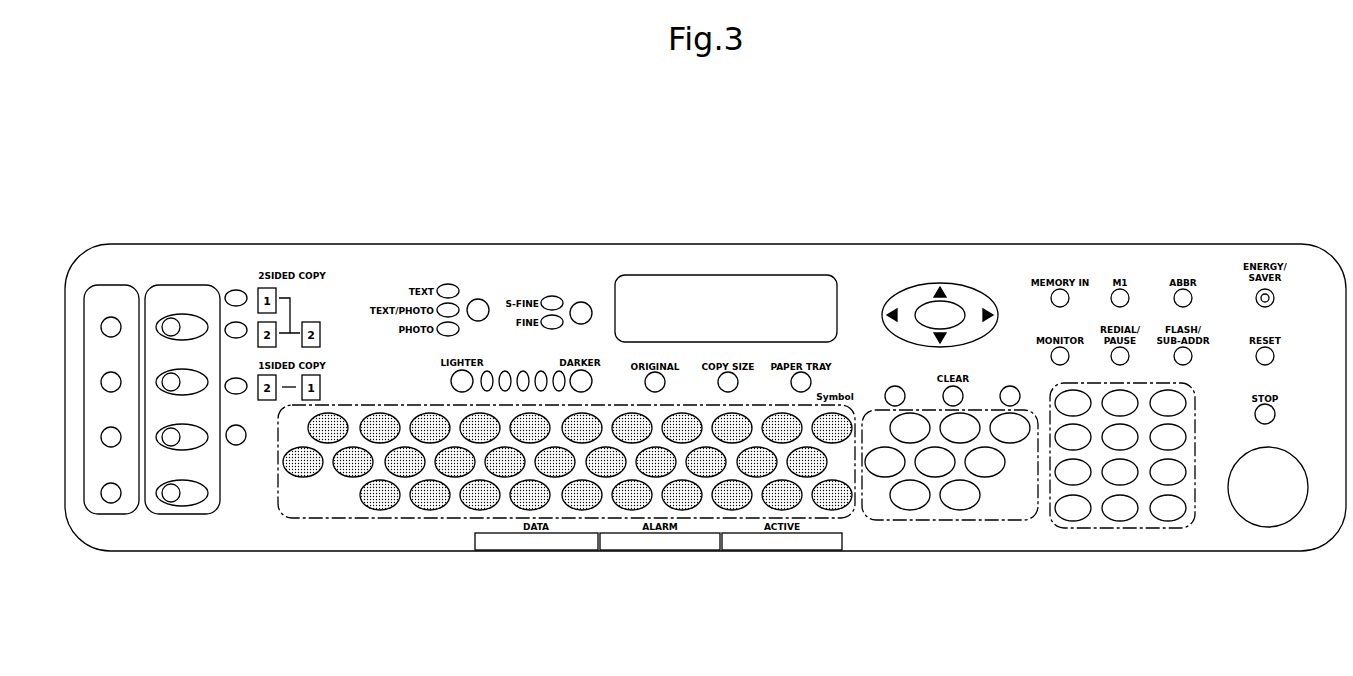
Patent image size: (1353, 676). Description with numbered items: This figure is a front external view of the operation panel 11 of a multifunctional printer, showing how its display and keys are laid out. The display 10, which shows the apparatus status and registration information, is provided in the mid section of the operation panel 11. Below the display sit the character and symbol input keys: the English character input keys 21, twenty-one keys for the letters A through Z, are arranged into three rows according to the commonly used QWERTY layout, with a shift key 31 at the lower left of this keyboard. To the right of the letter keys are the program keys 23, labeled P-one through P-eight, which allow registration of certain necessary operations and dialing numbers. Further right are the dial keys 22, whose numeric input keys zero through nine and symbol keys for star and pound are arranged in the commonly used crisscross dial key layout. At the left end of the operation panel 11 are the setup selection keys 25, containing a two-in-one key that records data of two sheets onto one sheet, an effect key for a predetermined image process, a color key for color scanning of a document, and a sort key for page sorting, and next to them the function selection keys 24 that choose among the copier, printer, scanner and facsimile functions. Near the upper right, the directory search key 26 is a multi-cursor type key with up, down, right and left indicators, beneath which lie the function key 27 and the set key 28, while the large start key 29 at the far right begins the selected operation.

The display 10 is at (657, 275).
The operation panel 11 is at (1187, 200).
The English character input keys 21 is at (448, 518).
The dial keys 22 is at (1135, 528).
The program keys 23 is at (988, 520).
The function selection keys 24 is at (182, 285).
The setup selection keys 25 is at (112, 285).
The directory search key 26 is at (884, 308).
The function key 27 is at (886, 388).
The set key 28 is at (1022, 387).
The start key 29 is at (1268, 527).
The shift key 31 is at (300, 478).